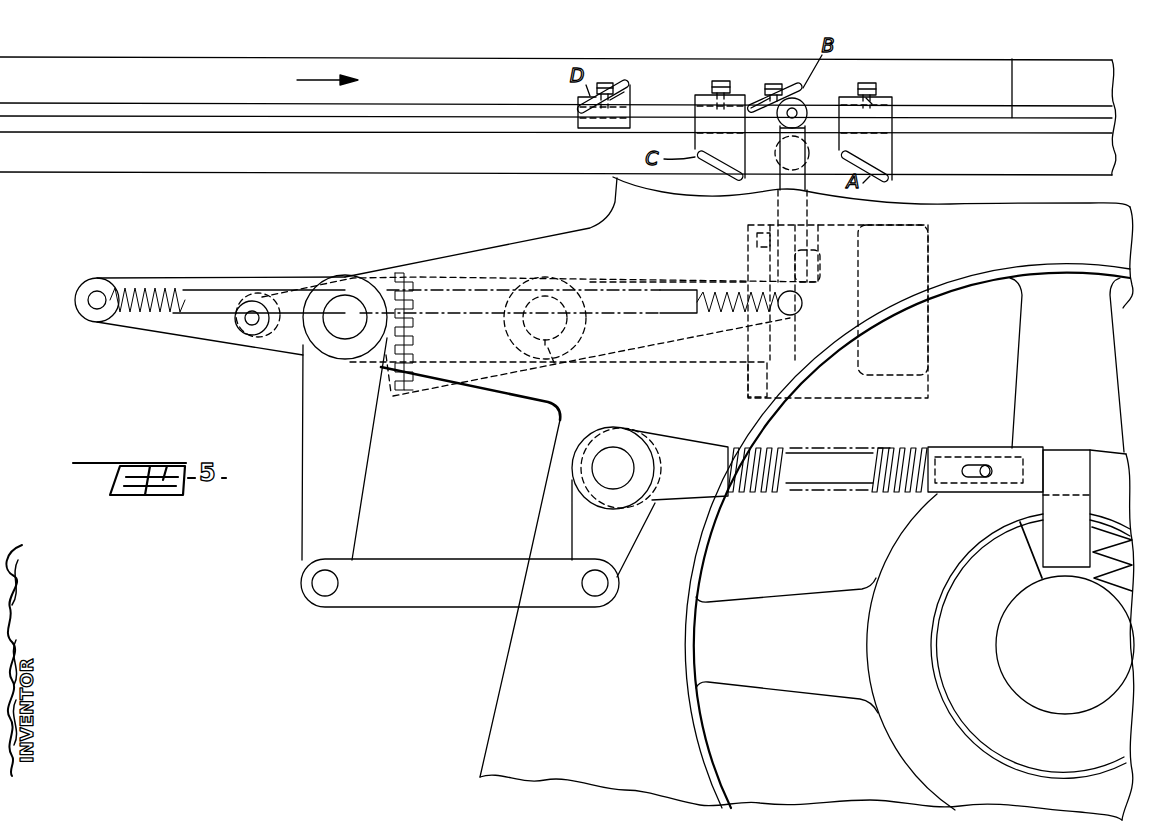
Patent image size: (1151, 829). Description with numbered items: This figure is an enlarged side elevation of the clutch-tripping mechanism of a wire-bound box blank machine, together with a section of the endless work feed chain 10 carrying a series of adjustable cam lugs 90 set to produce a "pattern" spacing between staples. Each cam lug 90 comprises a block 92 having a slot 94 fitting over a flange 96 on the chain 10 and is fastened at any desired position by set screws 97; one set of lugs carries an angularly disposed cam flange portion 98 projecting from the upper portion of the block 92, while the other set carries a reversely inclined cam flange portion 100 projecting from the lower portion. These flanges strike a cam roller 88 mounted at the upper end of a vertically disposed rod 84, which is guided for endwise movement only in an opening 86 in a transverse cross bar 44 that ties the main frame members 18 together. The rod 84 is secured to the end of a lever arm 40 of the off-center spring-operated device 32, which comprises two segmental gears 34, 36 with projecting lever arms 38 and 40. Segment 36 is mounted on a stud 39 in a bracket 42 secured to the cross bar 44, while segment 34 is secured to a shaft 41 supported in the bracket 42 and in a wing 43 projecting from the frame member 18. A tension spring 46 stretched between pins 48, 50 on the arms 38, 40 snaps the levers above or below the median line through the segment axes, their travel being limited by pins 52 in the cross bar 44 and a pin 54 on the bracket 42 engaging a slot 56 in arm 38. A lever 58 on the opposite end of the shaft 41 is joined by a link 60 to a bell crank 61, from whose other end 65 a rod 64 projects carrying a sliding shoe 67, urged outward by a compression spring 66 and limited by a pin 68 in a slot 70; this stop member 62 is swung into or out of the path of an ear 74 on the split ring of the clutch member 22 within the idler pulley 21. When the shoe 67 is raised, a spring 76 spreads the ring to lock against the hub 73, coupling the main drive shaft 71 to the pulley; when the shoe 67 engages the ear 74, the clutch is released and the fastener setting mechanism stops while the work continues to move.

The work feed chain 10 is at (447, 58).
The frame member 18 is at (498, 727).
The idler pulley 21 is at (690, 722).
The clutch member 22 is at (993, 550).
The off-center spring-operated device 32 is at (398, 243).
The segmental gear 34 is at (402, 386).
The segmental gear 36 is at (430, 388).
The lever arm 38 is at (222, 277).
The stud 39 is at (556, 345).
The lever arm 40 is at (660, 358).
The shaft 41 is at (341, 303).
The bracket 42 is at (600, 370).
The wing 43 is at (508, 398).
The transverse cross bar 44 is at (860, 282).
The tension spring 46 is at (155, 320).
The pin 48 is at (78, 303).
The pin 50 is at (802, 303).
The pin 52 is at (755, 240).
The pin 54 is at (248, 336).
The slot 56 is at (255, 300).
The lever 58 is at (302, 518).
The link 60 is at (478, 610).
The bell crank 61 is at (620, 583).
The stop member 62 is at (947, 578).
The rod 64 is at (830, 483).
The other end of bell crank 65 is at (722, 447).
The compression spring 66 is at (890, 493).
The sliding shoe 67 is at (1035, 455).
The pin 68 is at (987, 478).
The slot 70 is at (968, 480).
The main drive shaft 71 is at (1018, 672).
The hub 73 is at (905, 740).
The ear 74 is at (1091, 512).
The spring 76 is at (1098, 586).
The vertically disposed rod 84 is at (790, 208).
The opening 86 is at (812, 246).
The cam roller 88 is at (808, 114).
The cam lug 90 is at (577, 129).
The block 92 is at (876, 100).
The slot 94 is at (615, 102).
The flange 96 is at (1016, 120).
The set screw 97 is at (603, 82).
The cam flange portion 98 is at (630, 88).
The cam flange portion 100 is at (728, 178).